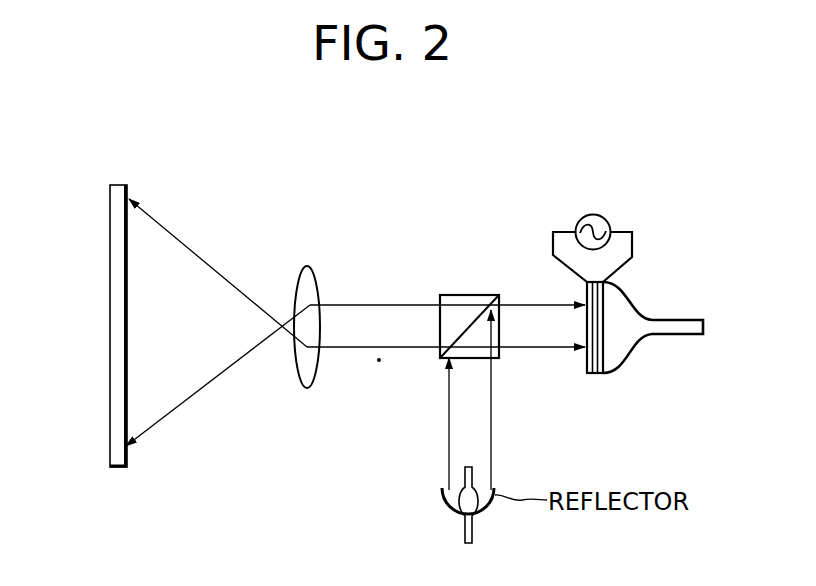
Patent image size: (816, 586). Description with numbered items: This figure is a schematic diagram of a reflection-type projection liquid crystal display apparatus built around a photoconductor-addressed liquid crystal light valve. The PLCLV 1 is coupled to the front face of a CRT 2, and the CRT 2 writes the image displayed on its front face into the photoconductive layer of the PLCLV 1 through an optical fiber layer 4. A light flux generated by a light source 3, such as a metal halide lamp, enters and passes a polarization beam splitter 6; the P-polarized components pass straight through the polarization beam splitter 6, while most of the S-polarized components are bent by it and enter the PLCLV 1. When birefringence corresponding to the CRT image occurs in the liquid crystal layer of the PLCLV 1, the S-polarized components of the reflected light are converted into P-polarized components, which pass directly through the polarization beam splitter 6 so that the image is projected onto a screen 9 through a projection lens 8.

The PLCLV 1 is at (586, 366).
The CRT 2 is at (703, 326).
The light source 3 is at (474, 535).
The optical fiber layer 4 is at (598, 375).
The polarization beam splitter 6 is at (462, 296).
The projection lens 8 is at (313, 290).
The screen 9 is at (112, 300).